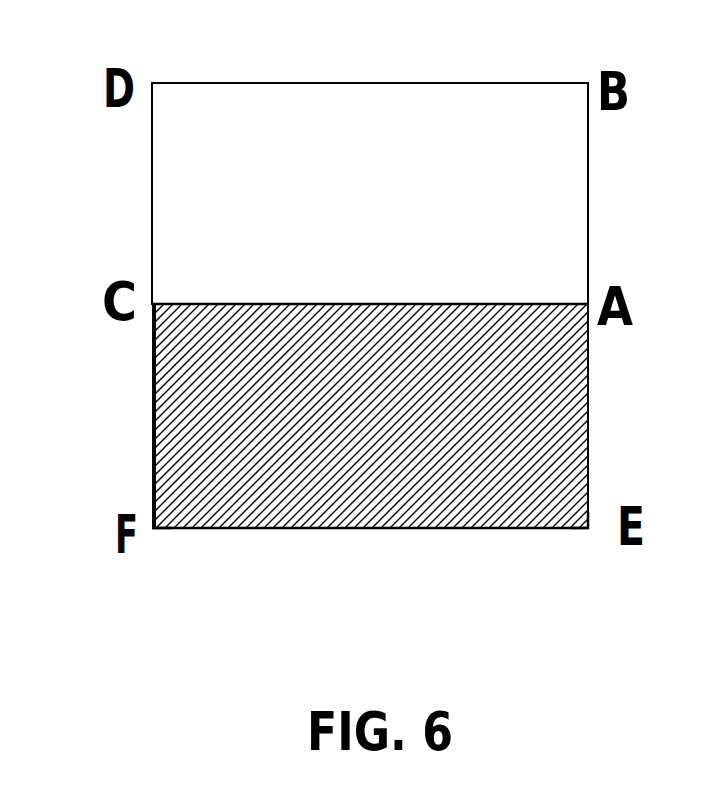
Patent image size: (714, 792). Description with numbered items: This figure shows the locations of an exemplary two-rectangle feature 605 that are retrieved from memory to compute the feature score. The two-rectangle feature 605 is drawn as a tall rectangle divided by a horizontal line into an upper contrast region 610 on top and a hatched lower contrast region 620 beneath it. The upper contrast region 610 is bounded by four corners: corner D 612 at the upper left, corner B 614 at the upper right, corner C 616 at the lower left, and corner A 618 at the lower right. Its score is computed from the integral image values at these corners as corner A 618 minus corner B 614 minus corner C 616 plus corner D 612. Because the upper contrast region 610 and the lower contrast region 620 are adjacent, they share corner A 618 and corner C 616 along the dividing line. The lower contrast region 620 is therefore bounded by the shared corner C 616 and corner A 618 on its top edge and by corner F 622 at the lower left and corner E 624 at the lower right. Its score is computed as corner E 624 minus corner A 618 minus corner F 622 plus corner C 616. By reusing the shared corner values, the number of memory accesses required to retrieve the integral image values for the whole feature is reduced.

The two-rectangle feature 605 is at (365, 83).
The upper contrast region 610 is at (152, 195).
The corner D 612 is at (153, 84).
The corner B 614 is at (586, 84).
The corner C 616 is at (153, 303).
The corner A 618 is at (588, 304).
The lower contrast region 620 is at (152, 417).
The corner F 622 is at (153, 529).
The corner E 624 is at (588, 530).